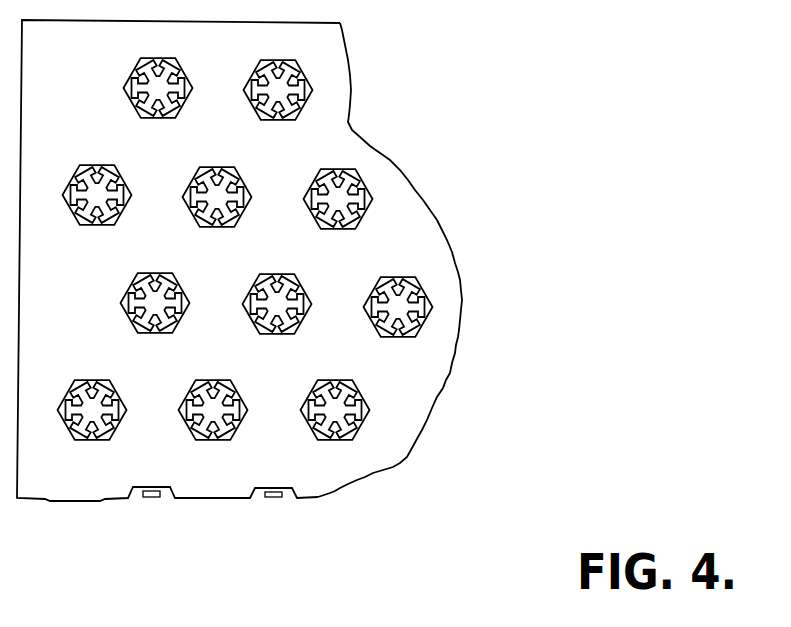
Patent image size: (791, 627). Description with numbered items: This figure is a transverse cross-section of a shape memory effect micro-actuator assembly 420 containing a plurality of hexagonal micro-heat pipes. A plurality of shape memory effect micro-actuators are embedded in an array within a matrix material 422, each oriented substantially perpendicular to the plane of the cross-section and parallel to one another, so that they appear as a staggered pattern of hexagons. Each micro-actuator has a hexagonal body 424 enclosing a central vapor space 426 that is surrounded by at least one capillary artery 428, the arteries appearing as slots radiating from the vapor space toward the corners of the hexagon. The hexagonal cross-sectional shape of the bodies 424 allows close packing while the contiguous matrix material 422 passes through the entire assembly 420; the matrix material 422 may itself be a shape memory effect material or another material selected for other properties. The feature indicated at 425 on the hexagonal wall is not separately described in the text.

The shape memory effect micro-actuator assembly 420 is at (354, 303).
The matrix material 422 is at (355, 118).
The body 424 is at (348, 462).
The hexagonal wall 425 is at (451, 330).
The vapor space 426 is at (410, 326).
The capillary artery 428 is at (496, 331).